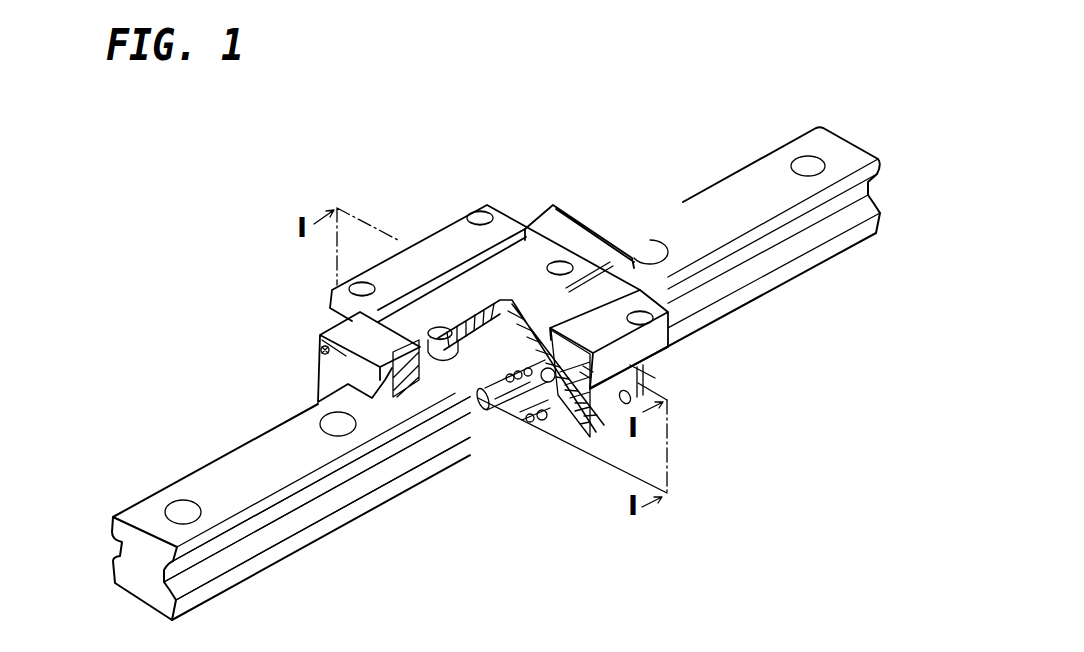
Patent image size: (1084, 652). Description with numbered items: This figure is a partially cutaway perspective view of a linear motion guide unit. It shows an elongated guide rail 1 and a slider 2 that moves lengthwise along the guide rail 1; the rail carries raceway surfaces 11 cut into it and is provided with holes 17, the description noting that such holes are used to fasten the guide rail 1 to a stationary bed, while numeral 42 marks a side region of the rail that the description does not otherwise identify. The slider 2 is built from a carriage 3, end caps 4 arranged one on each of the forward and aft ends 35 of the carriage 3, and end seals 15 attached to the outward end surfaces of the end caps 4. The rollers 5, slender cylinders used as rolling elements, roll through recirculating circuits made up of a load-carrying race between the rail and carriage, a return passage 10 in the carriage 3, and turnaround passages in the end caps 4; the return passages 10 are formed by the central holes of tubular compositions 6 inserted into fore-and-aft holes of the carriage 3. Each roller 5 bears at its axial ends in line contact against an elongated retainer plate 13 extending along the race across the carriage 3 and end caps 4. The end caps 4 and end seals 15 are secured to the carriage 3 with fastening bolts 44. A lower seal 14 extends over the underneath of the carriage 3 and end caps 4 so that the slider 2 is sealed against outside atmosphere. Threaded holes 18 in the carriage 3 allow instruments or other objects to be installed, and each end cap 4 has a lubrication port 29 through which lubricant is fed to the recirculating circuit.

The guide rail 1 is at (245, 460).
The slider 2 is at (584, 206).
The carriage 3 is at (442, 253).
The end cap 4 is at (353, 337).
The roller 5 is at (500, 371).
The tubular composition 6 is at (592, 445).
The return passage 10 is at (560, 352).
The raceway surface 11 is at (205, 578).
The retainer plate 13 is at (483, 412).
The lower seal 14 is at (515, 428).
The end seal 15 is at (335, 373).
The rail mounting hole 17 is at (183, 505).
The threaded hole 18 is at (480, 218).
The lubrication port 29 is at (404, 385).
The forward and aft ends 35 is at (545, 238).
The rail side surface 42 is at (330, 527).
The fastening bolt 44 is at (320, 347).